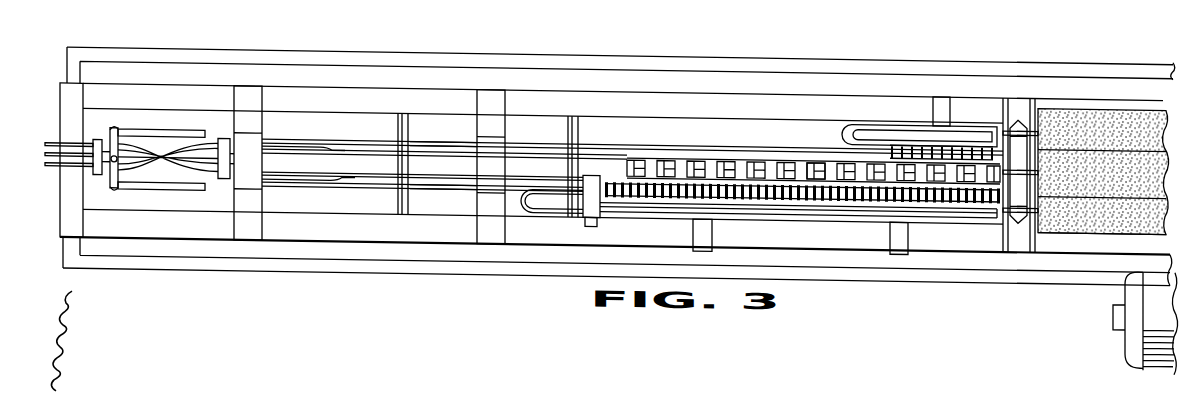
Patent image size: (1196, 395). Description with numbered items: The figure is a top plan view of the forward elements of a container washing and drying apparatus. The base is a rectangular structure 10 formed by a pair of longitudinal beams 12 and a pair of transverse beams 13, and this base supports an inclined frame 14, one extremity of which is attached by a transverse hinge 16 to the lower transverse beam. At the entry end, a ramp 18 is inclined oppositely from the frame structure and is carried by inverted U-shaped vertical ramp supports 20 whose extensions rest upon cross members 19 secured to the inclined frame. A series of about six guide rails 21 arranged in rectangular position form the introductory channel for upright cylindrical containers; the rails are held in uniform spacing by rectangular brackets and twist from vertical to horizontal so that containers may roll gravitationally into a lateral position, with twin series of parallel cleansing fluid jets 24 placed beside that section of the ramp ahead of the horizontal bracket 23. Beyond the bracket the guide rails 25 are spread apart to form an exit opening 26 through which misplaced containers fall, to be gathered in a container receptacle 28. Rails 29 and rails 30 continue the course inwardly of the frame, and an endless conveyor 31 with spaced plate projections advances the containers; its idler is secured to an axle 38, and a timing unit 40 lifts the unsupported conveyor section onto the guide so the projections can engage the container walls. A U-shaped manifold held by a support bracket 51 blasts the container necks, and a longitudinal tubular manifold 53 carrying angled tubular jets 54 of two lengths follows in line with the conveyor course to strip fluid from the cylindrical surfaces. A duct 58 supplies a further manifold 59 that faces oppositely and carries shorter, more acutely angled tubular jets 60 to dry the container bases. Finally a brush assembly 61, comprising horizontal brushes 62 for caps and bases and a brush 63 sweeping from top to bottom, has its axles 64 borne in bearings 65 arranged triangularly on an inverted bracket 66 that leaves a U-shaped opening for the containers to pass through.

The rectangular structure 10 is at (441, 276).
The beams 12 is at (698, 52).
The transverse beams 13 is at (68, 289).
The inclined frame 14 is at (92, 86).
The hinge 16 is at (68, 221).
The ramp 18 is at (187, 204).
The cross members 19 is at (250, 218).
The vertical ramp supports 20 is at (255, 166).
The guide rails 21 is at (68, 136).
The rectangular bracket 23 is at (230, 136).
The cleansing fluid jets 24 is at (163, 121).
The guide rails 25 is at (358, 167).
The exit opening 26 is at (297, 162).
The container receptacle 28 is at (455, 156).
The rails 29 is at (720, 155).
The rails 30 is at (432, 136).
The endless conveyor 31 is at (819, 150).
The axle 38 is at (412, 118).
The timing unit 40 is at (580, 123).
The support bracket 51 is at (593, 212).
The longitudinal manifold 53 is at (790, 199).
The tubular jets 54 is at (857, 188).
The duct 58 is at (863, 116).
The manifold 59 is at (975, 114).
The tubular jets 60 is at (910, 130).
The brush assembly 61 is at (1103, 159).
The horizontal brushes 62 is at (1058, 210).
The brush 63 is at (1112, 175).
The axles 64 is at (1037, 113).
The bearings 65 is at (1020, 107).
The inverted bracket 66 is at (1022, 209).